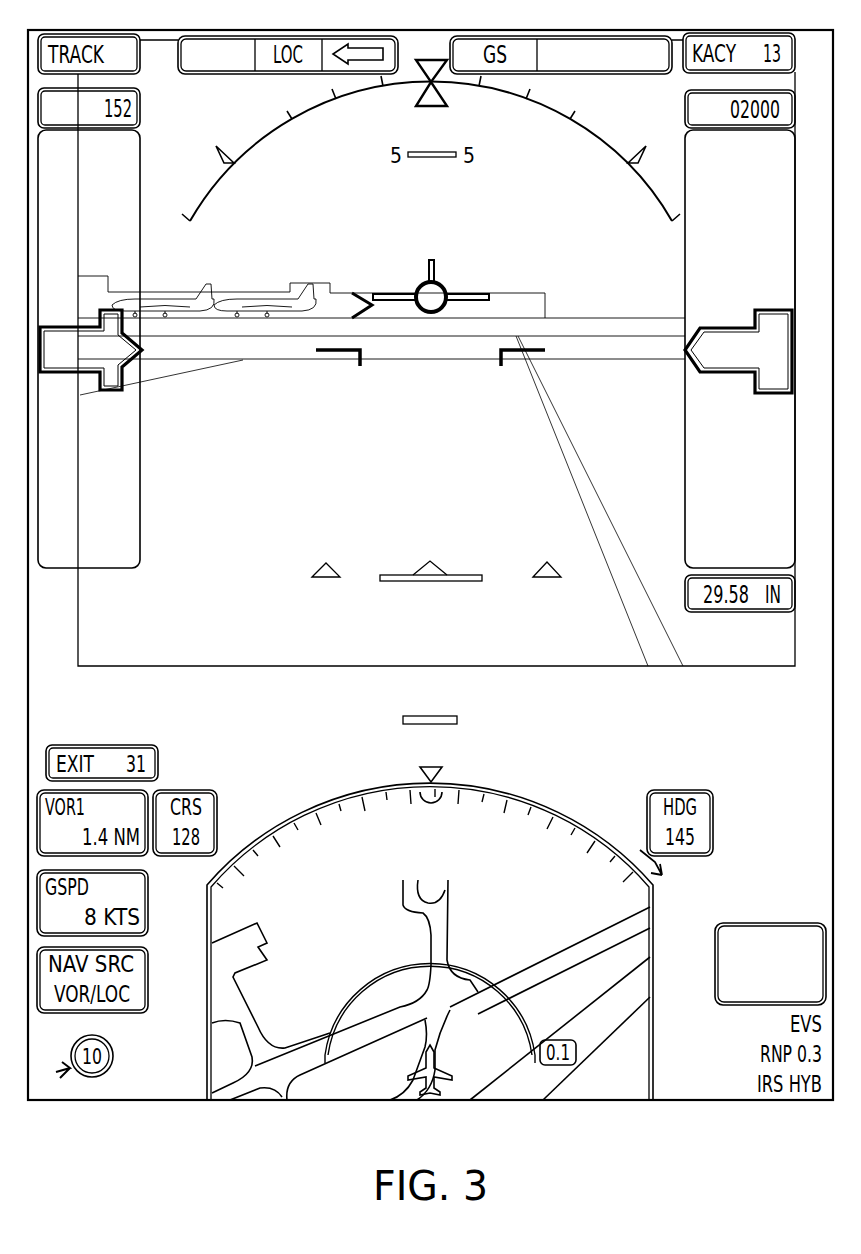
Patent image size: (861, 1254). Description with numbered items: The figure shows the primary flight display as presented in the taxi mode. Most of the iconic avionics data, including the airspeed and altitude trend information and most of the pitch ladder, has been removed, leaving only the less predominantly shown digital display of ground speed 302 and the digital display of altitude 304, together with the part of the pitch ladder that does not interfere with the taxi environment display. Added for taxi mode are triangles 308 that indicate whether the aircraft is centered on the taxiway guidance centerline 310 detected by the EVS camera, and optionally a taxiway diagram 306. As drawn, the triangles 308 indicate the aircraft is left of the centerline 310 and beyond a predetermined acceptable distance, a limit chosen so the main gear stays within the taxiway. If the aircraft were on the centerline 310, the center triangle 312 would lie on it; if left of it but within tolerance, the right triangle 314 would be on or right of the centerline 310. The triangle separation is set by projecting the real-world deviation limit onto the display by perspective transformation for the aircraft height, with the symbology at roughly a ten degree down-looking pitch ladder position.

The digital display of ground speed 302 is at (125, 386).
The digital display of altitude 304 is at (756, 395).
The taxiway diagram 306 is at (514, 836).
The triangles 308 is at (422, 510).
The taxiway guidance centerline 310 is at (553, 418).
The center triangle 312 is at (432, 562).
The right triangle 314 is at (547, 562).